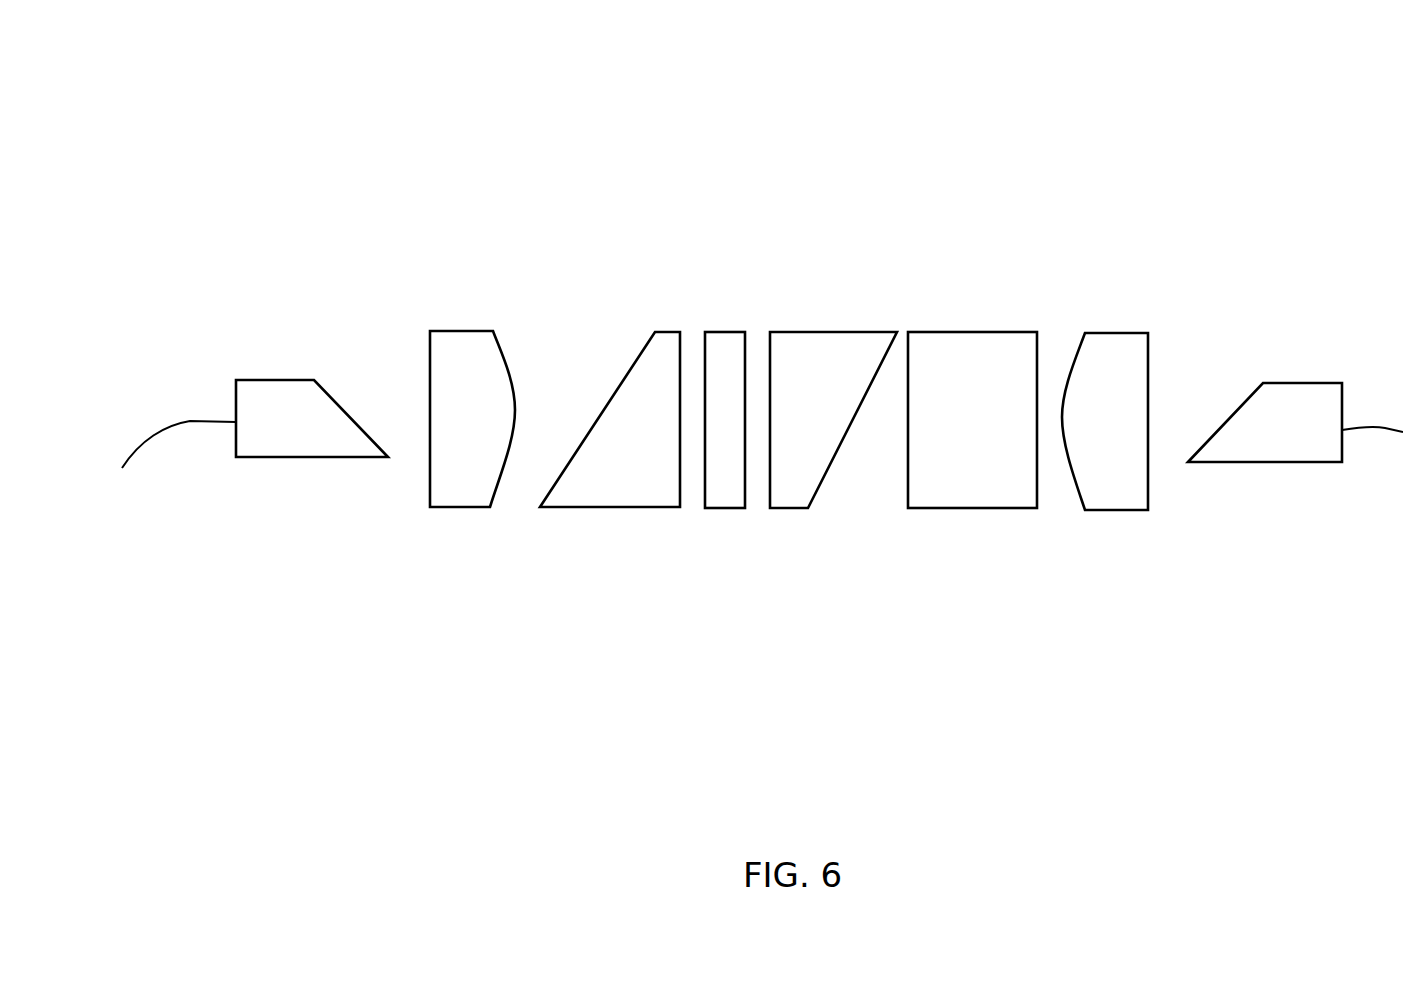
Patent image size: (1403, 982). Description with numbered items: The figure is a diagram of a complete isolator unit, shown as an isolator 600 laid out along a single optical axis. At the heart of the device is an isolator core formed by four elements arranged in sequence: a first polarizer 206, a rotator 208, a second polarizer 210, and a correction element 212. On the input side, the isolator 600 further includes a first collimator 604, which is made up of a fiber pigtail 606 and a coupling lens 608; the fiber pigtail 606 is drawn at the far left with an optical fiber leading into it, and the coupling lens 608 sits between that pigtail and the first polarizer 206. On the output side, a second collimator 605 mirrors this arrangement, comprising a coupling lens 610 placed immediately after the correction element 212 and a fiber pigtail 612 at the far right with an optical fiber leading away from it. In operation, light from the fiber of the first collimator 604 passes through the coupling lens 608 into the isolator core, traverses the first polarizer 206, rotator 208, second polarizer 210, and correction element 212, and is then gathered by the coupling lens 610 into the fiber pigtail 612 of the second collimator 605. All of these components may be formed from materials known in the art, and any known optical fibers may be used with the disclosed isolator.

The isolator 600 is at (218, 76).
The first collimator 604 is at (307, 316).
The second collimator 605 is at (1190, 280).
The fiber pigtail 606 is at (315, 447).
The coupling lens 608 is at (492, 448).
The first polarizer 206 is at (651, 448).
The rotator 208 is at (745, 448).
The second polarizer 210 is at (822, 448).
The correction element 212 is at (987, 448).
The coupling lens 610 is at (1129, 450).
The fiber pigtail 612 is at (1306, 450).